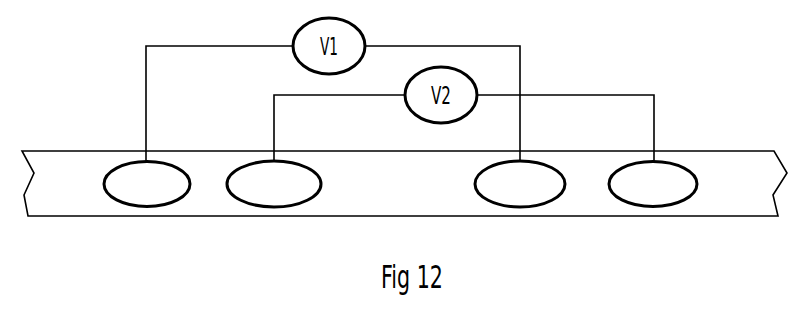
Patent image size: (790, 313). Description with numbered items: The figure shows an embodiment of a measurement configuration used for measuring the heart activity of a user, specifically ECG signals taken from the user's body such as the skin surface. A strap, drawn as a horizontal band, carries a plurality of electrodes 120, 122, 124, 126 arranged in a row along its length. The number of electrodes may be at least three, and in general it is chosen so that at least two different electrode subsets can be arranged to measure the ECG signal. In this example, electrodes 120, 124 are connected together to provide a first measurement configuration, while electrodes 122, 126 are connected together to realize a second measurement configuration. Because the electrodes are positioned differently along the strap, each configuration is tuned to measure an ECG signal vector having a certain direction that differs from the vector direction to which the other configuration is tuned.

The electrode 120 is at (147, 184).
The electrode 122 is at (274, 184).
The electrode 124 is at (520, 184).
The electrode 126 is at (653, 184).